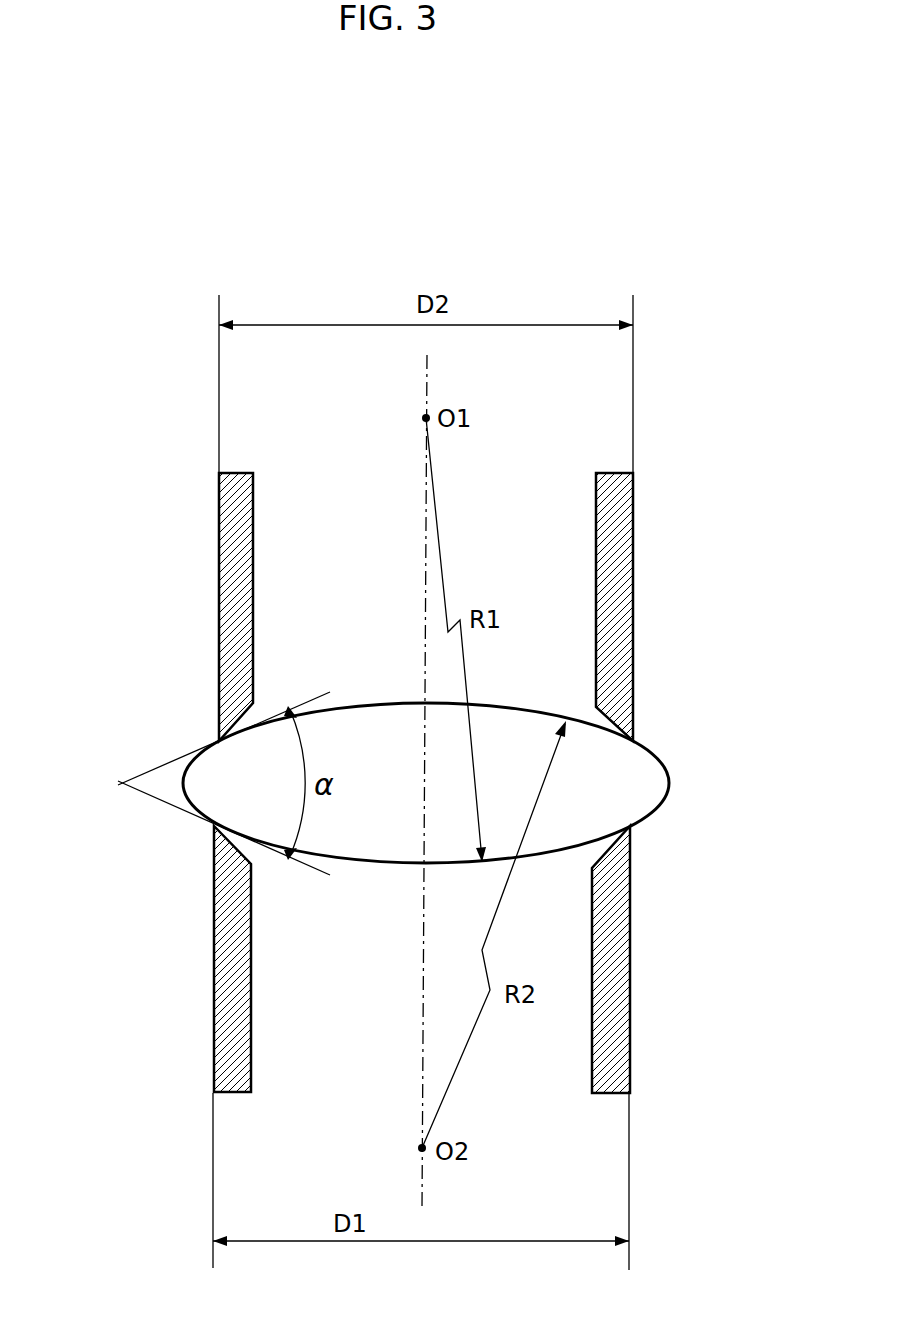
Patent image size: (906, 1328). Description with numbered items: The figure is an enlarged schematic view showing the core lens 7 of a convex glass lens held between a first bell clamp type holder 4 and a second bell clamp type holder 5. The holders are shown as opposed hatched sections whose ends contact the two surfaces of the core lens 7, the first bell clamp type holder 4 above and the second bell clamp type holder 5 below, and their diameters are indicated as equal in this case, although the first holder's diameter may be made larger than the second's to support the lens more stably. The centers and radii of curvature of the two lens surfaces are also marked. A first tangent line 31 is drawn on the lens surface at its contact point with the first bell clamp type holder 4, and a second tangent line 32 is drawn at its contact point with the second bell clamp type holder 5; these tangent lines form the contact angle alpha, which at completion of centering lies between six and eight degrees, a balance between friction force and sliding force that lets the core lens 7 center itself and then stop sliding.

The first bell clamp type holder 4 is at (236, 537).
The second bell clamp type holder 5 is at (232, 945).
The core lens 7 is at (643, 773).
The first tangent line 31 is at (303, 703).
The second tangent line 32 is at (313, 868).